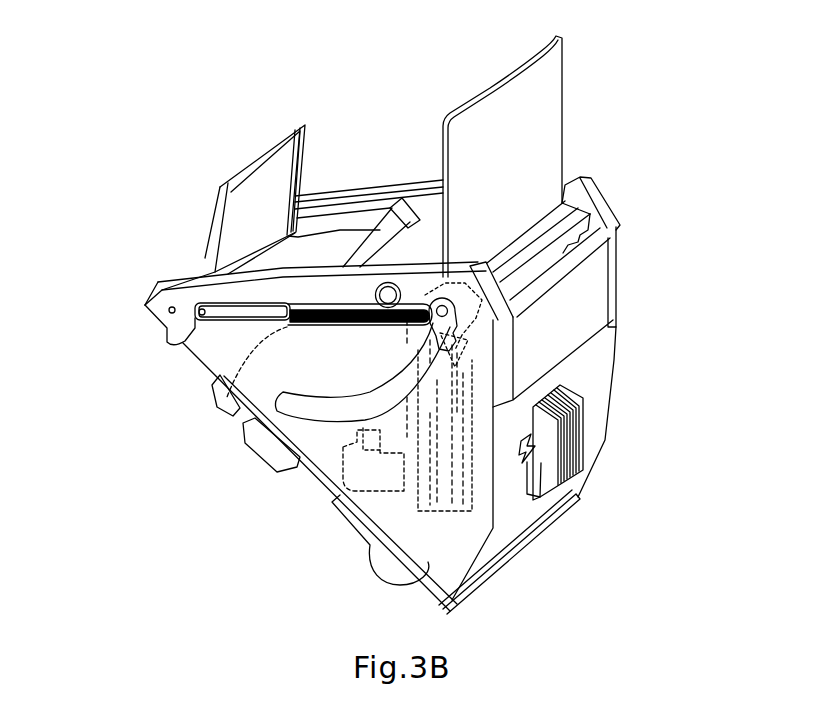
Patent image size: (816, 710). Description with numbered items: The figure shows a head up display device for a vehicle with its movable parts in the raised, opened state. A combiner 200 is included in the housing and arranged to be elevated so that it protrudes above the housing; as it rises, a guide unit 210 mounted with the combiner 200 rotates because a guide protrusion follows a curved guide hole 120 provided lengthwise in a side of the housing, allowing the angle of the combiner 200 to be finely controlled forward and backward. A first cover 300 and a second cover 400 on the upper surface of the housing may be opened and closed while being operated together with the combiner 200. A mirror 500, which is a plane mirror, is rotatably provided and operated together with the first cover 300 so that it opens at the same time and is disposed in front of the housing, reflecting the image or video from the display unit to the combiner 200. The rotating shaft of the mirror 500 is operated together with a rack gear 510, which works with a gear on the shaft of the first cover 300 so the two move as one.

The mirror 500 is at (265, 150).
The first cover 300 is at (427, 240).
The combiner 200 is at (557, 104).
The second cover 400 is at (607, 280).
The rack gear 510 is at (222, 403).
The guide hole 120 is at (337, 427).
The guide unit 210 is at (448, 520).